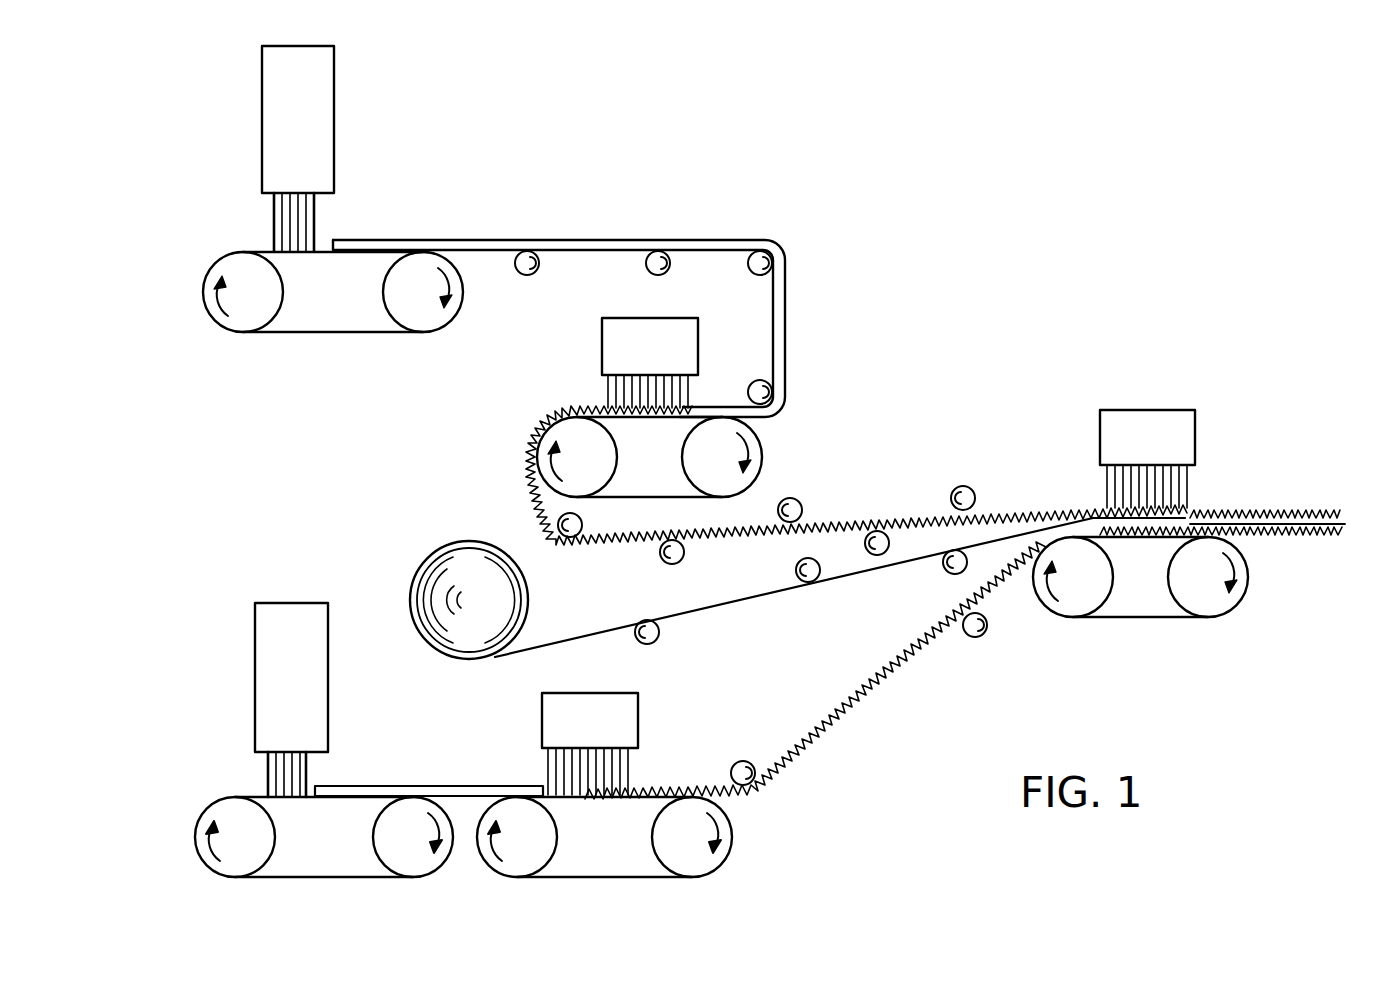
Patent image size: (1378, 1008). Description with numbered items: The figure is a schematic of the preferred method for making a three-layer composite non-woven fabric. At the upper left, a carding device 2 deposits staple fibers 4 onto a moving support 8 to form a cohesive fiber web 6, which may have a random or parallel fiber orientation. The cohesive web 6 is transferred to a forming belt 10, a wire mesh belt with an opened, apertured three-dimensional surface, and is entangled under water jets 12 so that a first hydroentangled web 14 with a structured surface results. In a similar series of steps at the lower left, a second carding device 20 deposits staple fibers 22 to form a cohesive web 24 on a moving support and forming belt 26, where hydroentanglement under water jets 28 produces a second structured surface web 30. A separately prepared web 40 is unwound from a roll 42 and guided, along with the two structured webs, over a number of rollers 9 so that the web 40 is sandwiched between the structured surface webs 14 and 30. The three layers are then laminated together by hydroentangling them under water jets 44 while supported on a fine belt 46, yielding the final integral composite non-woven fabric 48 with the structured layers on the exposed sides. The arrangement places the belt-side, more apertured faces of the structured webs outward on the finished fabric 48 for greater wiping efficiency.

The carding device 2 is at (334, 107).
The staple fibers 4 is at (273, 228).
The cohesive fiber web 6 is at (583, 240).
The moving support 8 is at (377, 333).
The roller 9 is at (527, 278).
The forming belt 10 is at (677, 497).
The water jets 12 is at (602, 392).
The first hydroentangled web 14 is at (860, 515).
The carding device 20 is at (328, 705).
The staple fibers 22 is at (266, 767).
The cohesive web 24 is at (392, 785).
The forming belt 26 is at (302, 878).
The water jets 28 is at (632, 768).
The second structured surface web 30 is at (845, 705).
The web 40 is at (567, 633).
The roll 42 is at (438, 550).
The water jets 44 is at (1187, 481).
The fine belt 46 is at (1135, 618).
The composite non-woven fabric 48 is at (1298, 510).